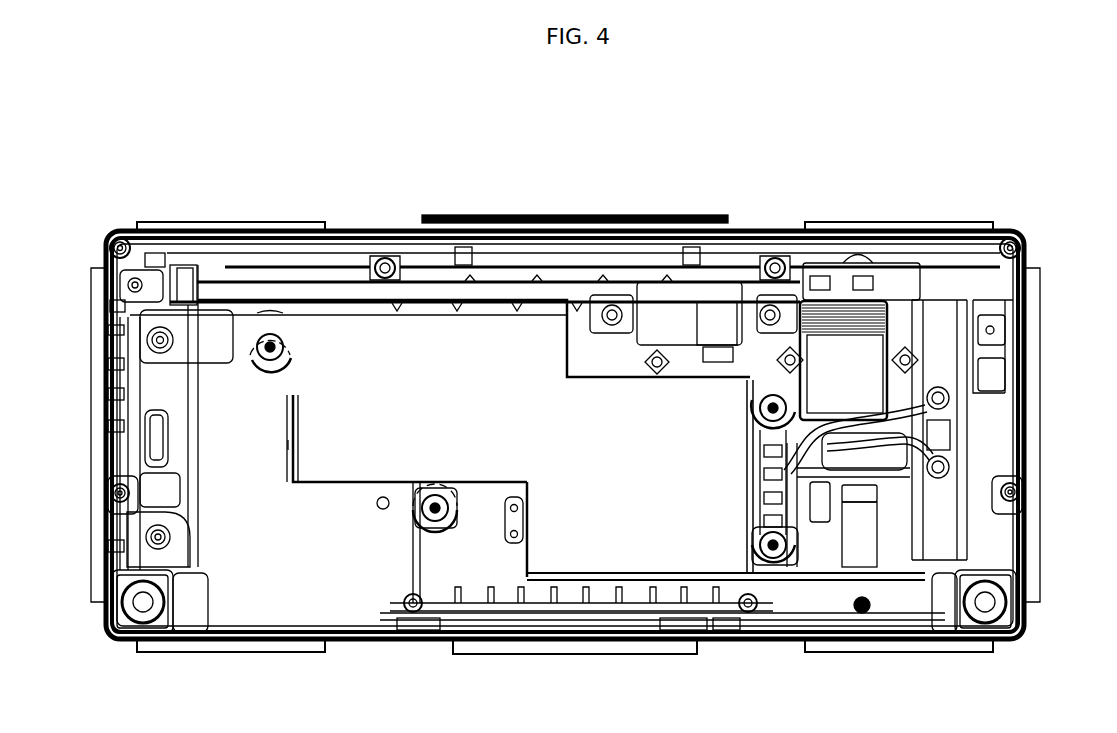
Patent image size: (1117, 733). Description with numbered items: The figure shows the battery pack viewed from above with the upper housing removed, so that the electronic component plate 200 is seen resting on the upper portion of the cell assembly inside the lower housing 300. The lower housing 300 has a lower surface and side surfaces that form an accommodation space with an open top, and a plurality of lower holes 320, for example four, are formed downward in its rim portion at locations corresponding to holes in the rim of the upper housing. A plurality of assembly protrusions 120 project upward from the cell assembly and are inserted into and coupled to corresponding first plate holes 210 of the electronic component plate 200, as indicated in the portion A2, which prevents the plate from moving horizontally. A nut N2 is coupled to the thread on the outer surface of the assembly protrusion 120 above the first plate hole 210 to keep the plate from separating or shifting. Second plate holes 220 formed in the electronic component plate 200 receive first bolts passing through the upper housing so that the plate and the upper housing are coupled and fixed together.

The lower housing 300 is at (229, 208).
The lower hole 320 is at (105, 248).
The second plate hole 220 is at (385, 258).
The electronic component plate 200 is at (297, 603).
The first plate hole 210 is at (290, 346).
The assembly protrusion 120 is at (262, 360).
The portion A2 is at (300, 360).
The nut N2 is at (292, 445).